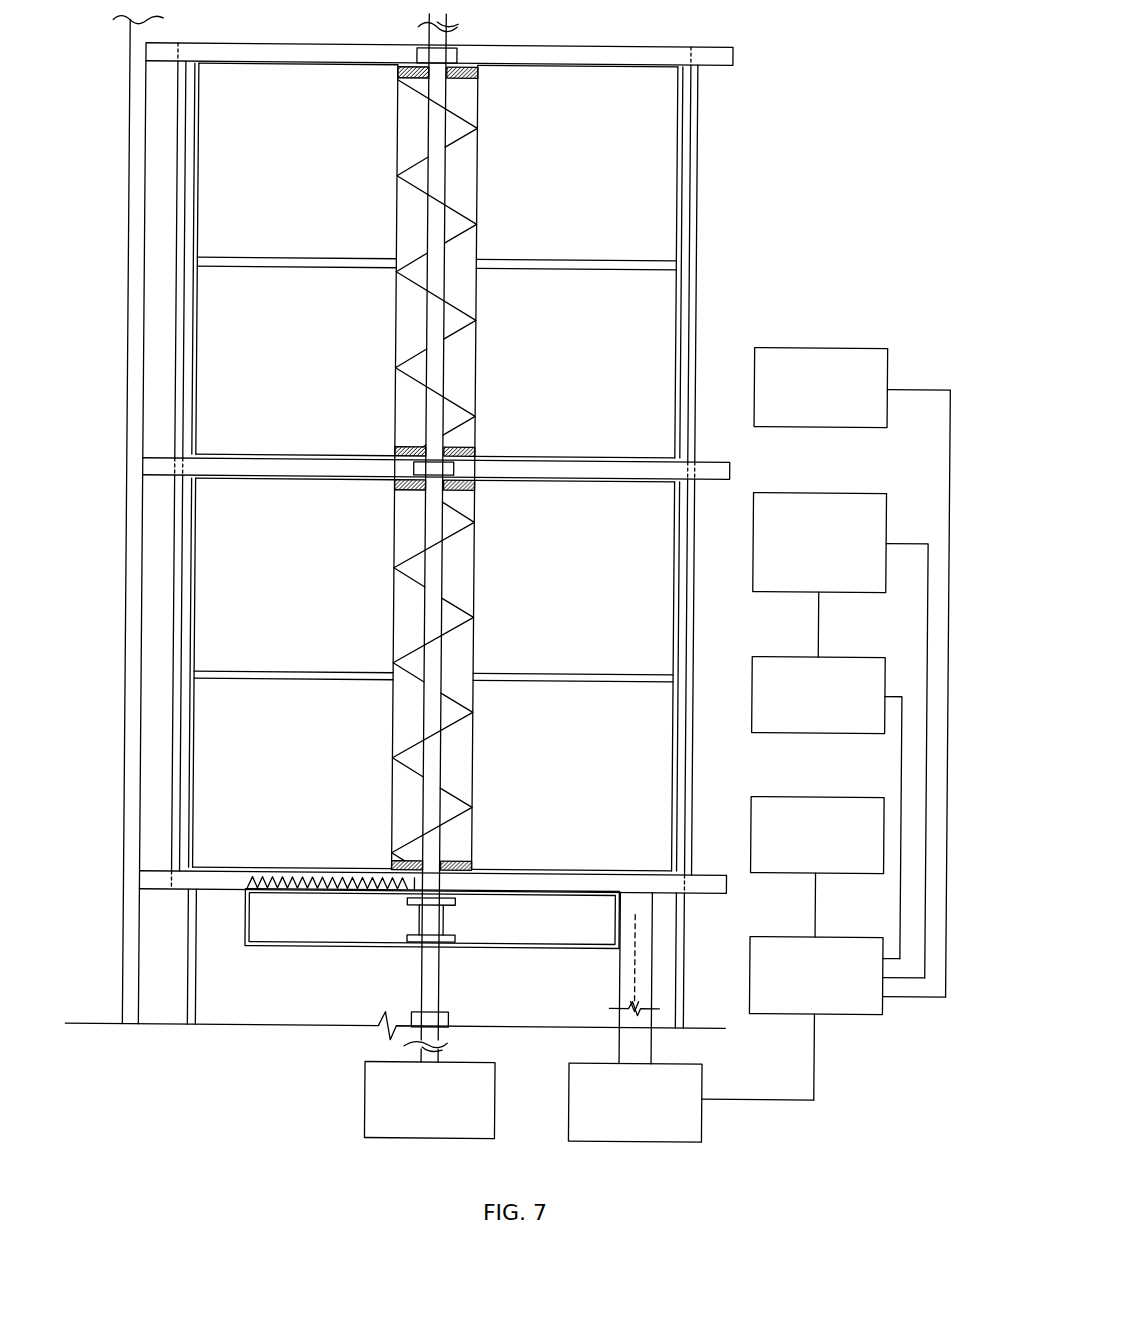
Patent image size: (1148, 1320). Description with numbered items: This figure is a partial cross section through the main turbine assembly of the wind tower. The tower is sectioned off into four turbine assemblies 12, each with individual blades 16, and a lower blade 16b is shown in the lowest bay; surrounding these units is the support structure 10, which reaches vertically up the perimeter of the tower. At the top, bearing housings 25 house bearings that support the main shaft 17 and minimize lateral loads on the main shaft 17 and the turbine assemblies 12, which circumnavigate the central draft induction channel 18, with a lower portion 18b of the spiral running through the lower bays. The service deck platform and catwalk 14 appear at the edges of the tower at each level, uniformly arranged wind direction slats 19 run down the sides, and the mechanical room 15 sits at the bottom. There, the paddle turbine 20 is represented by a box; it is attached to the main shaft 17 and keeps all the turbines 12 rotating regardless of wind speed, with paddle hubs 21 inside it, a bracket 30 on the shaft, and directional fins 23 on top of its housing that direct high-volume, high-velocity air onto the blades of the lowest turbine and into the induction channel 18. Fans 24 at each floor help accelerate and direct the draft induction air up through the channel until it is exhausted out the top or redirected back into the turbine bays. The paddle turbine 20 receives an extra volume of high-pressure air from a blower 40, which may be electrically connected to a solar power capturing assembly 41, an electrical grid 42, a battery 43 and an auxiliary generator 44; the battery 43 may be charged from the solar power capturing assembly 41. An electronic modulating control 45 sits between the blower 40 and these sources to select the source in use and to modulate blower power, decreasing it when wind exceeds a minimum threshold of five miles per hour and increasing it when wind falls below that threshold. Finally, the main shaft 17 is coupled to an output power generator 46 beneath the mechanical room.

The support structure 10 is at (136, 54).
The turbine assembly 12 is at (195, 139).
The service deck platform and catwalk 14 is at (685, 55).
The mechanical room 15 is at (210, 997).
The blade 16 is at (207, 326).
The lower air passage panel 16b is at (197, 811).
The main shaft 17 is at (430, 31).
The draft induction channel 18 is at (409, 189).
The lower helical turbine blade 18b is at (397, 726).
The wind direction slat 19 is at (697, 172).
The paddle turbine 20 is at (328, 935).
The paddle hub 21 is at (462, 900).
The directional fin 23 is at (283, 893).
The fan 24 is at (479, 73).
The bearing housing 25 is at (460, 53).
The bearing bracket 30 is at (451, 930).
The blower 40 is at (710, 1128).
The solar power capturing assembly 41 is at (857, 490).
The electrical grid 42 is at (852, 794).
The battery 43 is at (852, 654).
The auxiliary generator 44 is at (857, 345).
The electronic modulating control 45 is at (852, 934).
The output power generator 46 is at (373, 1103).